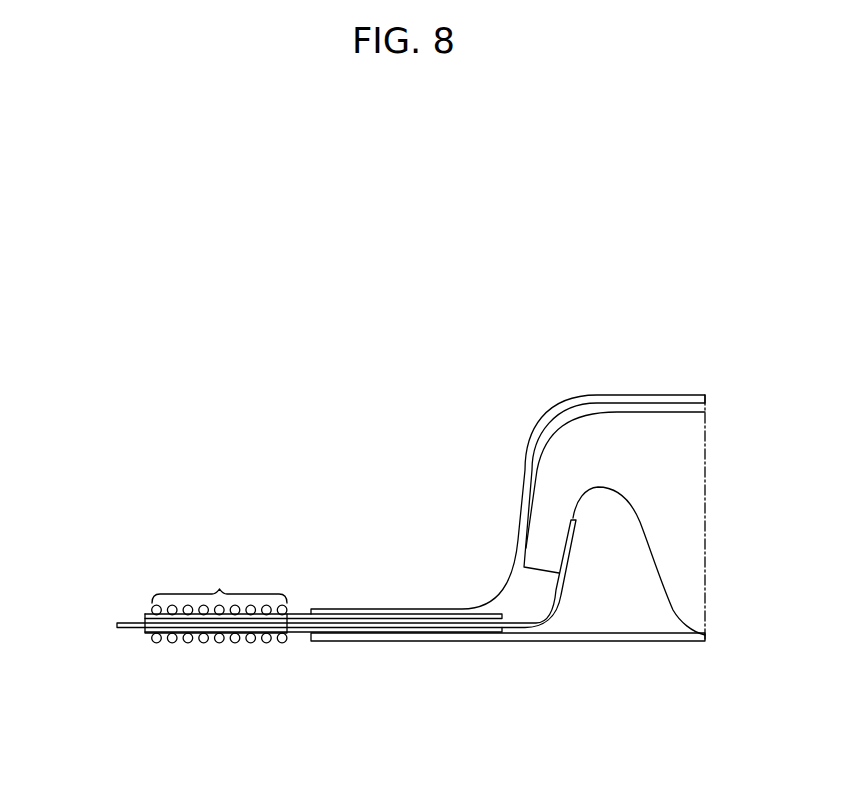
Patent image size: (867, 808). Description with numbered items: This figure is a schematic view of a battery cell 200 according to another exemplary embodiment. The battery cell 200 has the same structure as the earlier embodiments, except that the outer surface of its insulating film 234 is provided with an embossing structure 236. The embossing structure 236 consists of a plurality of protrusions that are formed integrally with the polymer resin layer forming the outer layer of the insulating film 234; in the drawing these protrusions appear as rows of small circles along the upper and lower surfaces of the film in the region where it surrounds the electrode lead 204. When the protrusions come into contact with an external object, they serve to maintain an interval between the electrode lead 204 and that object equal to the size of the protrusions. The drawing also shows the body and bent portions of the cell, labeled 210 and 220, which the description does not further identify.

The battery cell 200 is at (212, 407).
The electrode lead 204 is at (116, 623).
The display panel 210 is at (652, 636).
The window 220 is at (678, 490).
The insulating film 234 is at (184, 618).
The embossing structure 236 is at (219, 581).